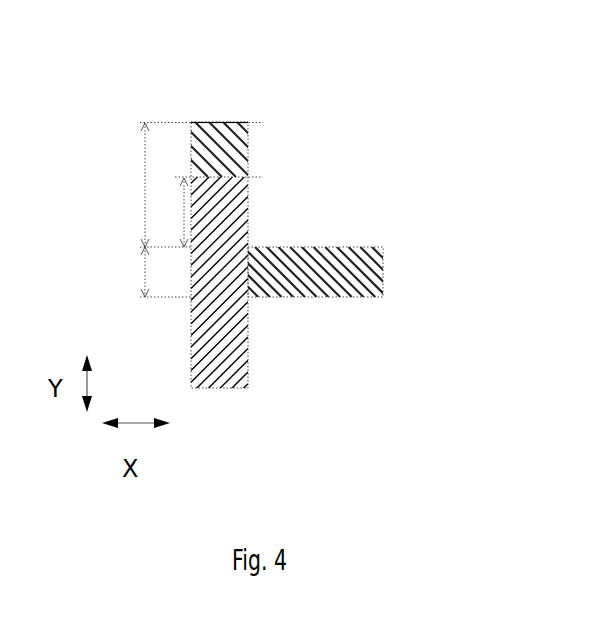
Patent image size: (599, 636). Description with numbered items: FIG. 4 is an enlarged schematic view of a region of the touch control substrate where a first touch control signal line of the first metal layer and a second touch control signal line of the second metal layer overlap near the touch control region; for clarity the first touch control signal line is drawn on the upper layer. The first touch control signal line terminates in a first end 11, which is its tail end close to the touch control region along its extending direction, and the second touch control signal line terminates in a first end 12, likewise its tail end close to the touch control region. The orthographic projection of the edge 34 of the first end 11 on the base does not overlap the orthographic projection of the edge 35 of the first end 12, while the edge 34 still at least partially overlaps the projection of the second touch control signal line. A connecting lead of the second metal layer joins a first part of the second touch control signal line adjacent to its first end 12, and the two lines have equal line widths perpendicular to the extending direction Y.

The edge of first end of first touch control signal line 34 is at (205, 122).
The edge of first end of second touch control signal line 35 is at (217, 122).
The first end of second touch control signal line 12 is at (126, 185).
The first end of first touch control signal line 11 is at (170, 212).